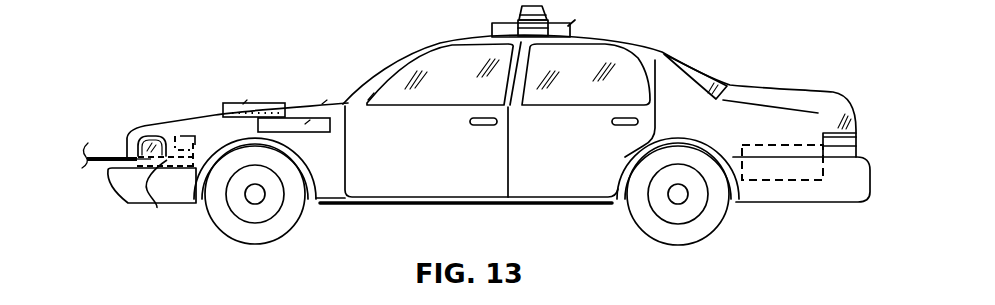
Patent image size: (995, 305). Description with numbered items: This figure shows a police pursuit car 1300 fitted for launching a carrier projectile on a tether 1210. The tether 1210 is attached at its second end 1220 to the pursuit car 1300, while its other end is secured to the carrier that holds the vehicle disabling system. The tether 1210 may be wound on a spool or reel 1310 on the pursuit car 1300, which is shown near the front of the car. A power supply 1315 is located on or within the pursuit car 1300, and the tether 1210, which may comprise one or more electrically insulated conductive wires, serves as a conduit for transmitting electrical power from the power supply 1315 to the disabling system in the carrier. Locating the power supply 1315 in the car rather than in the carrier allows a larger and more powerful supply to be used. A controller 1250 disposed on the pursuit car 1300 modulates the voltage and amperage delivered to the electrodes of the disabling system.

The pursuit car 1300 is at (365, 233).
The tether 1210 is at (112, 157).
The second end 1220 is at (115, 157).
The controller 1250 is at (188, 136).
The spool or reel 1310 is at (157, 208).
The power supply 1315 is at (783, 170).